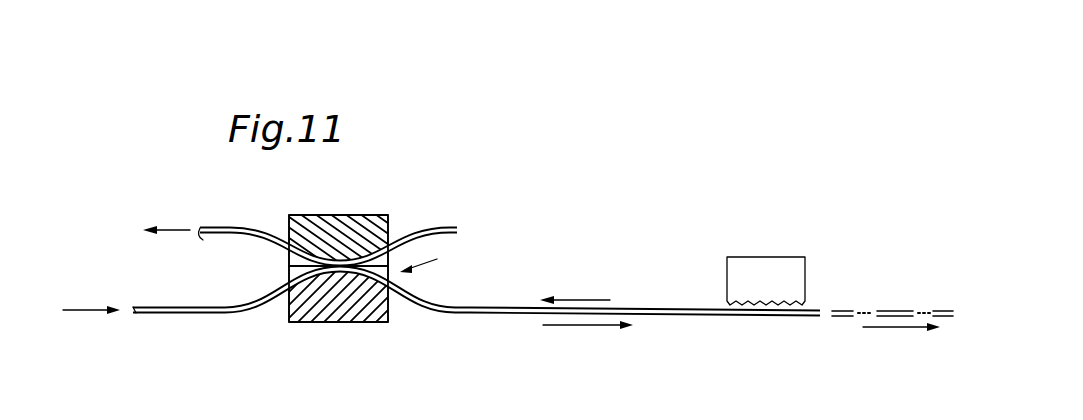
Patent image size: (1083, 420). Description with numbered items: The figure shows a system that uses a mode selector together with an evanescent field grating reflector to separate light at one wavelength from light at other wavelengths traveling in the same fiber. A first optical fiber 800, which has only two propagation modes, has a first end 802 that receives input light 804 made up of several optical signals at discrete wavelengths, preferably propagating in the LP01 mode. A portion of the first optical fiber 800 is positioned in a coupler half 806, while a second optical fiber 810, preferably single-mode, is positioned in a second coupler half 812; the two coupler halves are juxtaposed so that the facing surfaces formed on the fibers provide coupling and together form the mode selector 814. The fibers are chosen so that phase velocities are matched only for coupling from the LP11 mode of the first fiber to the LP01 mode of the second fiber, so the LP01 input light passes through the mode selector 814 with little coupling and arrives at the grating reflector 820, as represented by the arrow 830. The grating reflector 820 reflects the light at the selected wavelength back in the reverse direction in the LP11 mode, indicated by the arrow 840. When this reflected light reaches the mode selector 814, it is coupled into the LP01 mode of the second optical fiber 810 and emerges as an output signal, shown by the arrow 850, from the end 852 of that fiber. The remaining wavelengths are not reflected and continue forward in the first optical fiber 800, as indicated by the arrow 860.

The first optical fiber 800 is at (238, 313).
The first end 802 is at (134, 304).
The input light 804 is at (85, 307).
The coupler half 806 is at (340, 318).
The second optical fiber 810 is at (240, 227).
The second coupler half 812 is at (347, 215).
The mode selector 814 is at (447, 255).
The evanescent field grating reflector 820 is at (782, 258).
The arrow 830 is at (630, 327).
The arrow 840 is at (547, 300).
The arrow 850 is at (173, 230).
The end 852 is at (203, 240).
The arrow 860 is at (910, 327).